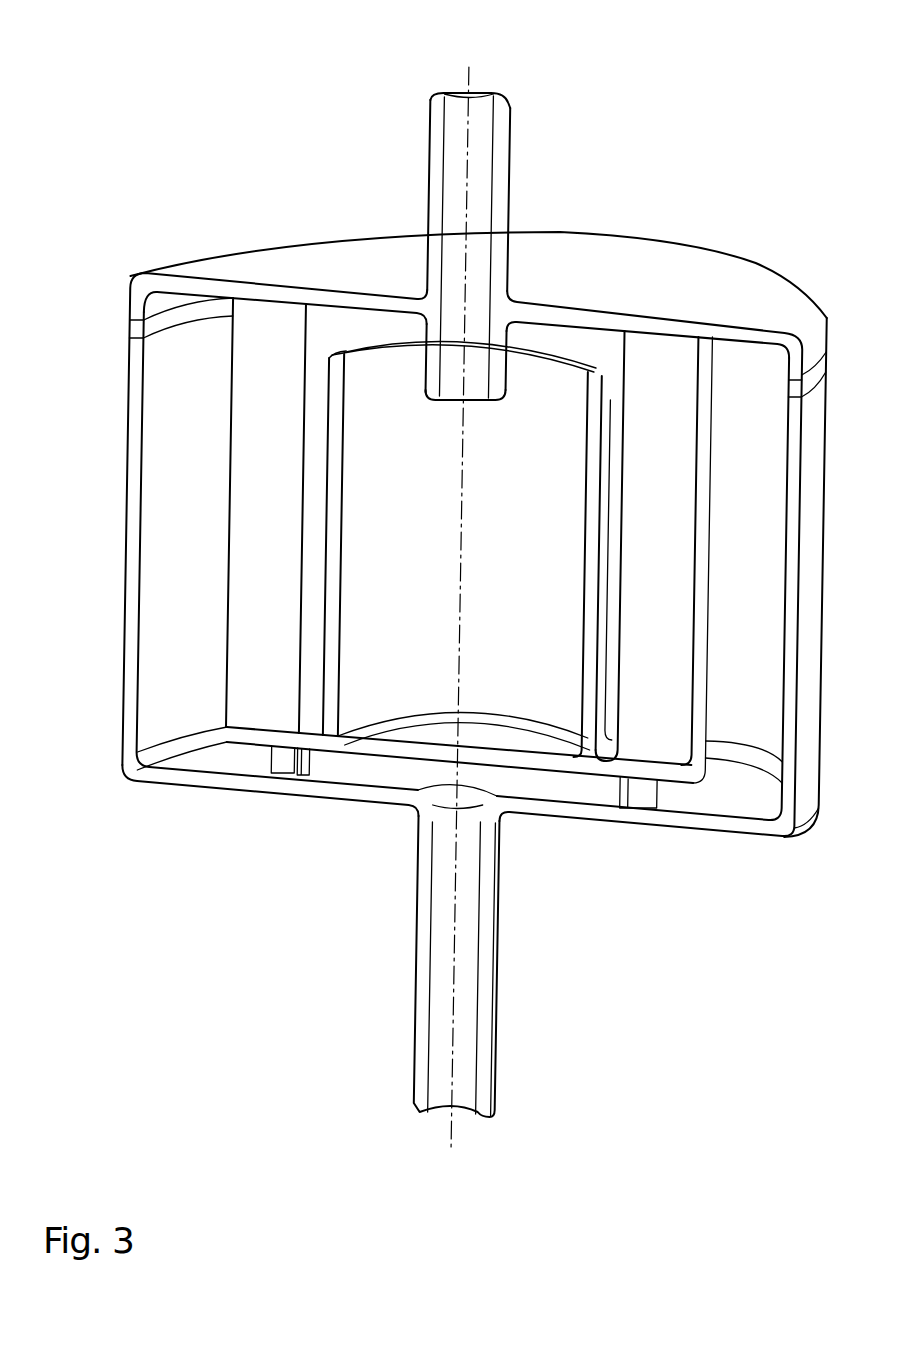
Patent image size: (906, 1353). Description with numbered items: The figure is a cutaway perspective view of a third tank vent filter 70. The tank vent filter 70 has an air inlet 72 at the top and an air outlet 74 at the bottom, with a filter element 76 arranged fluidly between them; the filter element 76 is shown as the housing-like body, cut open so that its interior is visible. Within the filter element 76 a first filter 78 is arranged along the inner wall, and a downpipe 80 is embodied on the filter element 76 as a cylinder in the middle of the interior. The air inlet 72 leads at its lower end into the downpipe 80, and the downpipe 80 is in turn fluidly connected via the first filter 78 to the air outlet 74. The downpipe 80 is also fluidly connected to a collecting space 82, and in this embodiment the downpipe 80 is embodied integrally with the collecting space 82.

The third tank vent filter 70 is at (758, 92).
The air inlet 72 is at (505, 172).
The air outlet 74 is at (506, 963).
The filter element 76 is at (734, 700).
The first filter 78 is at (662, 625).
The downpipe 80 is at (600, 515).
The collecting space 82 is at (412, 637).